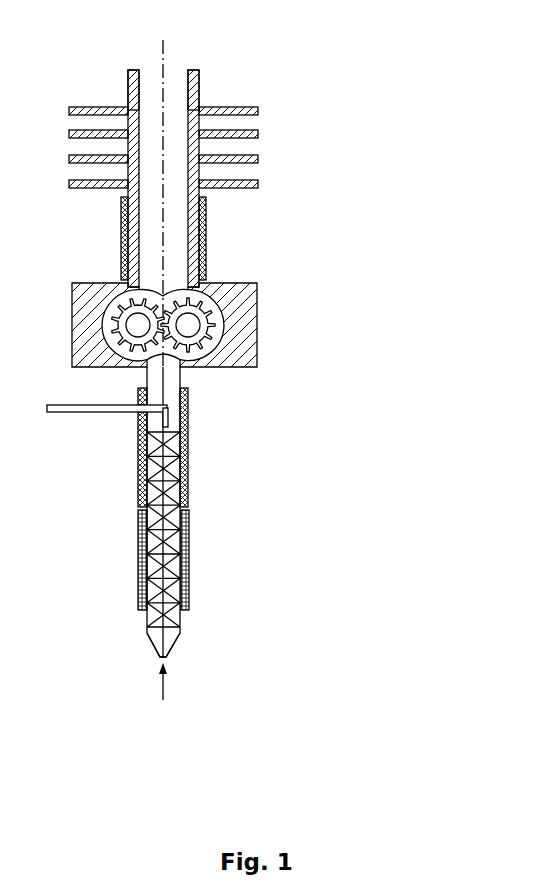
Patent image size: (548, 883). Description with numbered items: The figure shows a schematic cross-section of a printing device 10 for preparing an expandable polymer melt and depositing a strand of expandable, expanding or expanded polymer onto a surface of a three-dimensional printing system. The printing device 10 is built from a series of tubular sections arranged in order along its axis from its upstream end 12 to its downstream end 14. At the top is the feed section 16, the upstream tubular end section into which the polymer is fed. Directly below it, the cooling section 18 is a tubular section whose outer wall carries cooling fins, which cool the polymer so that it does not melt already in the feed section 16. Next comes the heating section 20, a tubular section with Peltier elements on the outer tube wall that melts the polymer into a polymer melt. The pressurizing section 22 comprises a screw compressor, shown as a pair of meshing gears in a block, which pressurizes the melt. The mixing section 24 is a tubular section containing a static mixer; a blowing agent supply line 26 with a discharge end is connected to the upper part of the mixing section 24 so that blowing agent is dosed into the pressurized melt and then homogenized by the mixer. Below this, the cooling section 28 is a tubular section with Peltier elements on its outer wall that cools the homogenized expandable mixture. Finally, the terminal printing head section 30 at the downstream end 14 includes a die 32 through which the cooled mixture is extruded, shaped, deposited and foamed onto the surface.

The printing device 10 is at (388, 95).
The upstream end 12 is at (130, 60).
The downstream end 14 is at (137, 633).
The feed section 16 is at (274, 73).
The cooling section 18 is at (274, 111).
The heating section 20 is at (274, 197).
The pressurizing section 22 is at (274, 283).
The mixing section 24 is at (274, 392).
The blowing agent supply line 26 is at (83, 415).
The cooling section 28 is at (274, 510).
The printing head section 30 is at (274, 611).
The die 32 is at (178, 695).